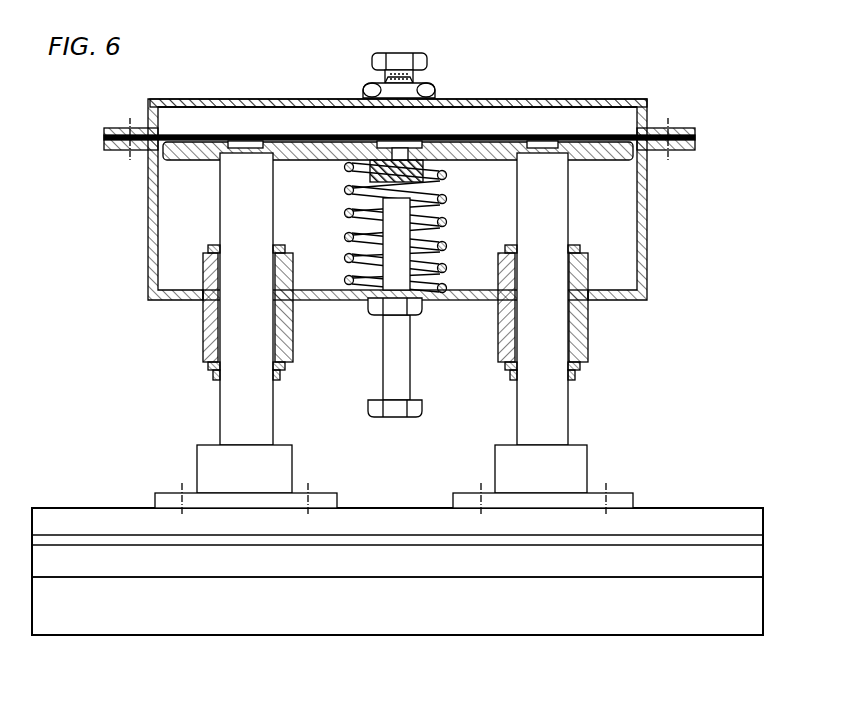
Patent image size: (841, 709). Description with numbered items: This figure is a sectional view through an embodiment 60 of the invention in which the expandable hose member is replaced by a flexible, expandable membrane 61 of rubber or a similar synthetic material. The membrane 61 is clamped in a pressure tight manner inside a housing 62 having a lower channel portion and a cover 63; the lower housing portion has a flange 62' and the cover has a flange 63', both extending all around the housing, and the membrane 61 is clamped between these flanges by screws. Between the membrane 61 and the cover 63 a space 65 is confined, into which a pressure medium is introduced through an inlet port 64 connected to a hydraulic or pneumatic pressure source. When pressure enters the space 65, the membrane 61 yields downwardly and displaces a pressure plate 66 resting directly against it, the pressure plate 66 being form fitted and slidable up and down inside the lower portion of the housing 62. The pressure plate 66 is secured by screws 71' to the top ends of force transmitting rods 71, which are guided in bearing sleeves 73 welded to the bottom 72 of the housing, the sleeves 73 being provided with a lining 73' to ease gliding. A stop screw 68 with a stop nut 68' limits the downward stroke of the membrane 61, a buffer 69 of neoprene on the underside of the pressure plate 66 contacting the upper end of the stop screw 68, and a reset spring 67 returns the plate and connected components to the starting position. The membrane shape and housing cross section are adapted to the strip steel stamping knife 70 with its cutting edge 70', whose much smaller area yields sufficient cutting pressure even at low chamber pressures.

The embodiment 60 is at (556, 90).
The membrane 61 is at (214, 134).
The housing 62 is at (419, 199).
The flange 62' is at (128, 156).
The cover 63 is at (398, 88).
The flange 63' is at (688, 128).
The inlet port 64 is at (420, 65).
The space 65 is at (331, 112).
The pressure plate 66 is at (331, 160).
The reset spring 67 is at (346, 262).
The stop screw 68 is at (383, 307).
The stop nut 68' is at (417, 318).
The buffer 69 is at (430, 176).
The strip steel stamping knife 70 is at (397, 557).
The cutting edge 70' is at (397, 625).
The force transmitting rods 71 is at (394, 334).
The screws 71' is at (422, 114).
The bottom 72 is at (353, 299).
The bearing sleeves 73 is at (399, 307).
The lining 73' is at (399, 292).